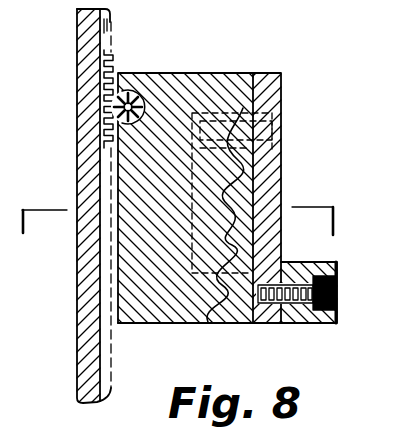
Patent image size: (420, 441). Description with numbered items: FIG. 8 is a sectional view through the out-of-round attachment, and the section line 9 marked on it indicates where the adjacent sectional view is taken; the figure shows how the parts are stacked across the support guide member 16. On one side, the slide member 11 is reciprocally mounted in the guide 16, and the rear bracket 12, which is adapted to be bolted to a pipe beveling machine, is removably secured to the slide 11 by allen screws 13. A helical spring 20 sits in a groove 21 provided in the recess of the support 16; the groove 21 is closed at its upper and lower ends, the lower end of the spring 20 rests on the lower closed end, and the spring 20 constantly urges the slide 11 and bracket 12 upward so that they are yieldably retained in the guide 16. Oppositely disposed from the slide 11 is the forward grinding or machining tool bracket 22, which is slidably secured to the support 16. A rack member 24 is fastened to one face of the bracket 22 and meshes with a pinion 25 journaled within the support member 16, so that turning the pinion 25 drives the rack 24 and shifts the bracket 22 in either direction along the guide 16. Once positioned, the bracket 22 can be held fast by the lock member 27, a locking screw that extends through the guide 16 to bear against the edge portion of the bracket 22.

The section line 9- 9 is at (177, 207).
The slide member 11 is at (272, 107).
The rear bracket 12 is at (328, 263).
The allen screws 13 is at (336, 297).
The support guide member 16 is at (203, 84).
The helical spring 20 is at (250, 167).
The groove 21 is at (222, 122).
The tool bracket 22 is at (77, 62).
The rack member 24 is at (111, 56).
The pinion 25 is at (133, 97).
The lock member 27 is at (409, 7).